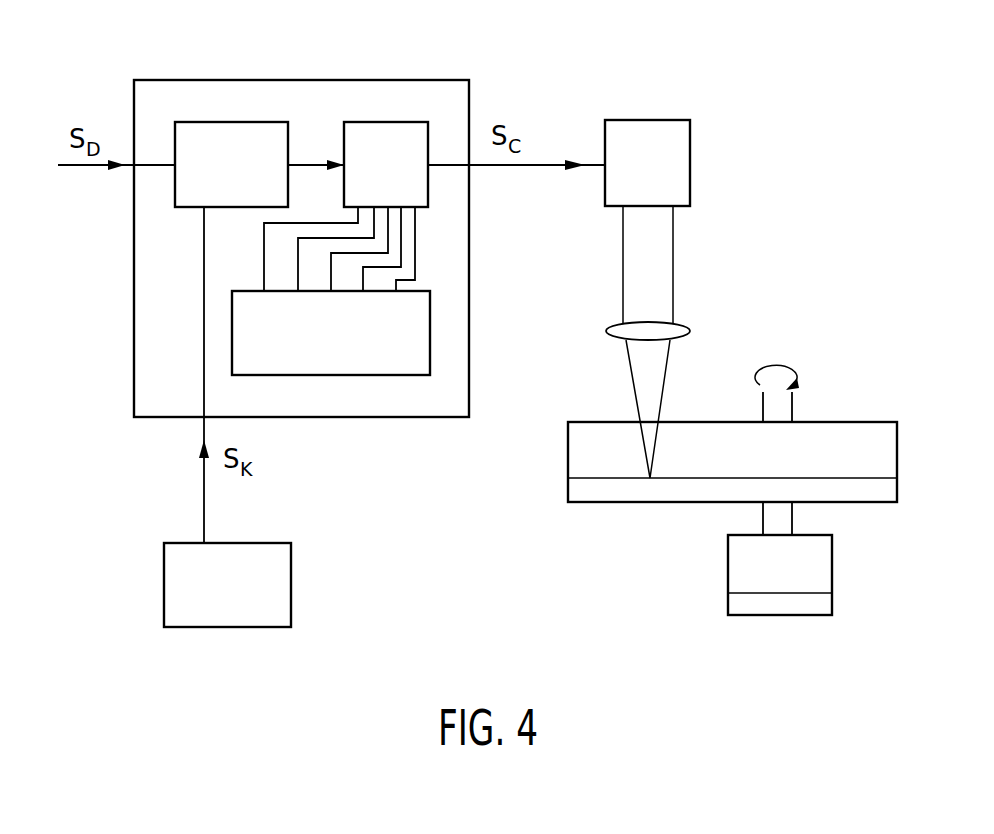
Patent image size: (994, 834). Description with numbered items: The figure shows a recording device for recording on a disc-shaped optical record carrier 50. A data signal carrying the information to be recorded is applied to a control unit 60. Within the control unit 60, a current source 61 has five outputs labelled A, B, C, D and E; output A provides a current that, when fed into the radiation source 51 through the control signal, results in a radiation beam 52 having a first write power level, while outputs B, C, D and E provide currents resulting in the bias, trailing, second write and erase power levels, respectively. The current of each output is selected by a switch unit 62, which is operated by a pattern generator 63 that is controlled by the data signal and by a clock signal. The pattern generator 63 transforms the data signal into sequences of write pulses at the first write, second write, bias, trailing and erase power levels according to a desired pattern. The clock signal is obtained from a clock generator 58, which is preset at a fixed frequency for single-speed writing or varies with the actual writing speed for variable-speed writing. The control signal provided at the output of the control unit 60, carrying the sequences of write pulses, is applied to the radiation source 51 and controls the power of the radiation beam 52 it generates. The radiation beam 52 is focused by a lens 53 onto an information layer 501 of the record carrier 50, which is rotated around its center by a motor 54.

The disc-shaped optical record carrier 50 is at (872, 430).
The information layer 501 is at (883, 490).
The radiation source 51 is at (680, 140).
The radiation beam 52 is at (660, 264).
The lens 53 is at (690, 332).
The motor 54 is at (738, 558).
The clock generator 58 is at (195, 613).
The control unit 60 is at (443, 405).
The current source 61 is at (375, 363).
The switch unit 62 is at (390, 132).
The pattern generator 63 is at (233, 132).